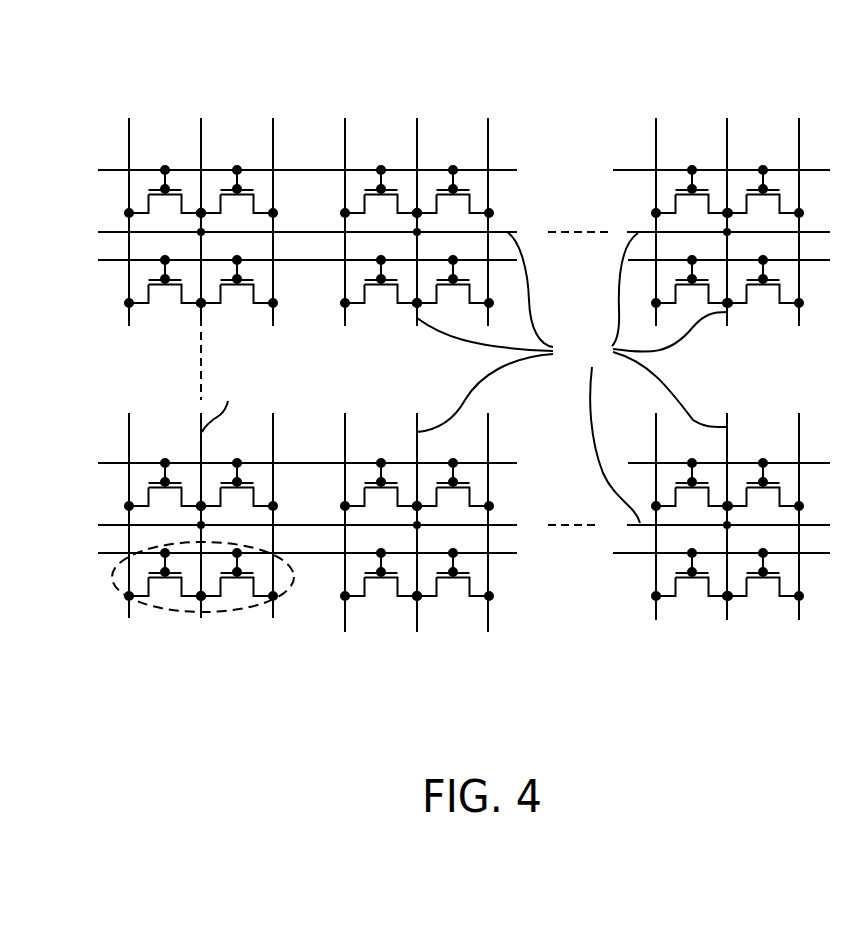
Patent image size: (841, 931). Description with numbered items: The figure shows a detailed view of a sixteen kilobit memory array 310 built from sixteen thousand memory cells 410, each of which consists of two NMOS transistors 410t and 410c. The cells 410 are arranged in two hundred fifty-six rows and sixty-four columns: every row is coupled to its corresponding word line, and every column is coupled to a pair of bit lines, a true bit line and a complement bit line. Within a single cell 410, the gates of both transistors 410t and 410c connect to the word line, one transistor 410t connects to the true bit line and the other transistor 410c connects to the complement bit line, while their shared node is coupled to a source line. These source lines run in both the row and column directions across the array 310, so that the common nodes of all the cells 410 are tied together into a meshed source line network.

The 16 Kb array 310 is at (430, 356).
The memory cell 410 is at (178, 591).
The NMOS transistor (true side) 410t is at (163, 588).
The NMOS transistor (complement side) 410c is at (235, 588).